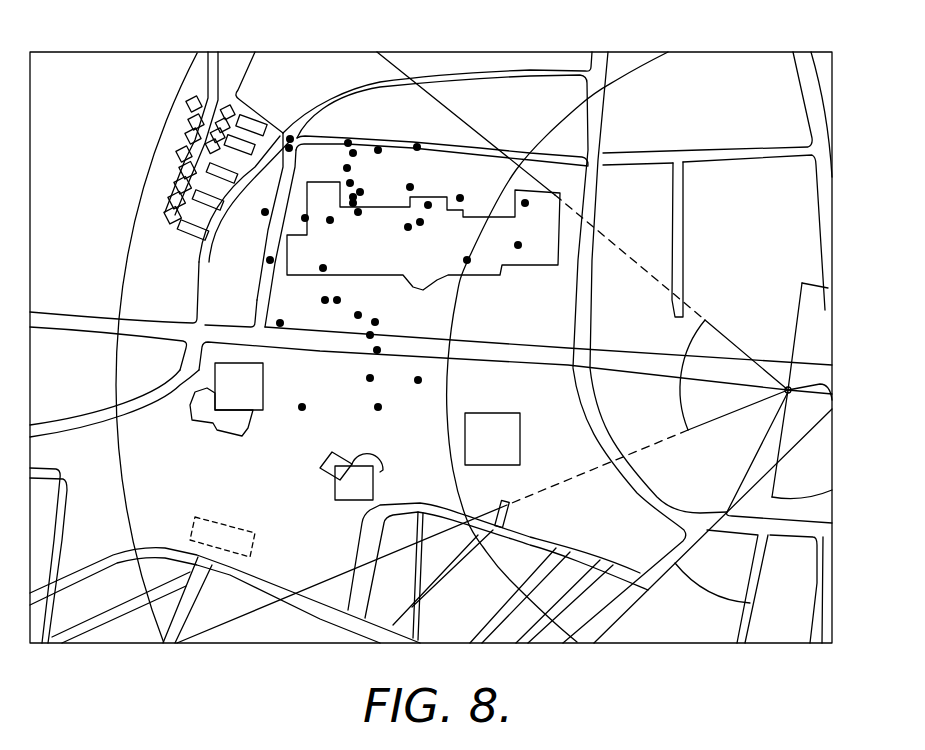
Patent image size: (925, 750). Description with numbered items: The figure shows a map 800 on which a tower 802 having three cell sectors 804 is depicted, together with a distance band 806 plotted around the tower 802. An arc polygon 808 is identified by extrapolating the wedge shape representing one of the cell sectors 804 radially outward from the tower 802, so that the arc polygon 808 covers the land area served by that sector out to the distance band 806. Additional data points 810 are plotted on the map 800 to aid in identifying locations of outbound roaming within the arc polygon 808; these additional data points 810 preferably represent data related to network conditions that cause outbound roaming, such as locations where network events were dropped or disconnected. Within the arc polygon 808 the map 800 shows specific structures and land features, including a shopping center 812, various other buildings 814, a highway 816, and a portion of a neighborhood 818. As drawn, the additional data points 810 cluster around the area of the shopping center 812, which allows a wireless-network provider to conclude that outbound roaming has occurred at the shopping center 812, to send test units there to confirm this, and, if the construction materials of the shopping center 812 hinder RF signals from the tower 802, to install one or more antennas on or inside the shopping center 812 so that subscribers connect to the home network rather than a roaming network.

The map 800 is at (752, 52).
The tower 802 is at (787, 387).
The cell sectors 804 is at (798, 313).
The distance band 806 is at (548, 70).
The arc polygon 808 is at (149, 307).
The additional data points 810 is at (348, 145).
The shopping center 812 is at (500, 275).
The buildings 814 is at (212, 430).
The highway 816 is at (430, 357).
The neighborhood 818 is at (210, 615).